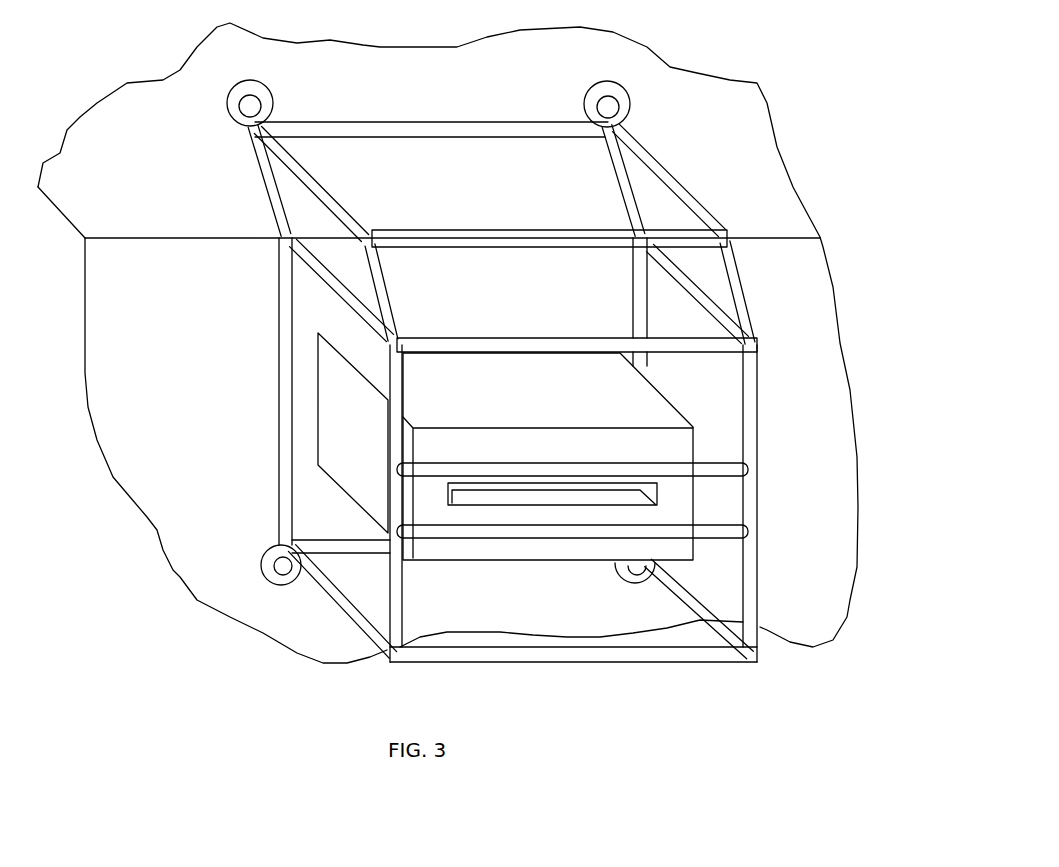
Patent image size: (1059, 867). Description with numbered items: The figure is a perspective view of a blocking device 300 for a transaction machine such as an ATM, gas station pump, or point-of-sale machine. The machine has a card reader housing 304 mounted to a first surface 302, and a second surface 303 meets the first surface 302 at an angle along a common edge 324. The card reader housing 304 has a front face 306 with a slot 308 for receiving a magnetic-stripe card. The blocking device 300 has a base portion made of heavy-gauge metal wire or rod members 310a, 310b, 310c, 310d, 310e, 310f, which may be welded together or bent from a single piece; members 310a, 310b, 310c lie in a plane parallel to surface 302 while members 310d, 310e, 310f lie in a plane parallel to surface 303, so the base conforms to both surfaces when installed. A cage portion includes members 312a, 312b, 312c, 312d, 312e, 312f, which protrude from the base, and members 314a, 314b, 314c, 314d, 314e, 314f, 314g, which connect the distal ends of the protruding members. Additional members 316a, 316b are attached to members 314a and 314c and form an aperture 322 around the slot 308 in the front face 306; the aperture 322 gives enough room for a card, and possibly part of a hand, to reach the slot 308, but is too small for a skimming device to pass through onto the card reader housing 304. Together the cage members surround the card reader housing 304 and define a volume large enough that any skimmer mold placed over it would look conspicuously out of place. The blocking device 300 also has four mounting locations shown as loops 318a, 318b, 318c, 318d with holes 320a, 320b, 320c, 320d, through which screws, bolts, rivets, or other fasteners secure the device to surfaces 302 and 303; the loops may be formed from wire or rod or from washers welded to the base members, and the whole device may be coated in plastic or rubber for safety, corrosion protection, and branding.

The blocking device 300 is at (144, 541).
The first surface 302 is at (177, 435).
The second surface 303 is at (166, 160).
The card reader housing 304 is at (505, 446).
The front face 306 is at (548, 487).
The slot 308 is at (590, 495).
The base portion member 310a is at (280, 382).
The base portion member 310b is at (331, 543).
The base portion member 310c is at (633, 276).
The base portion member 310d is at (623, 192).
The base portion member 310e is at (492, 128).
The base portion member 310f is at (270, 194).
The cage portion member 312a is at (343, 605).
The cage portion member 312b is at (710, 612).
The cage portion member 312c is at (683, 290).
The cage portion member 312d is at (650, 168).
The cage portion member 312e is at (335, 198).
The cage portion member 312f is at (315, 275).
The cage portion member 314a is at (398, 603).
The cage portion member 314b is at (571, 665).
The cage portion member 314c is at (752, 430).
The cage portion member 314d is at (733, 267).
The cage portion member 314e is at (478, 233).
The cage portion member 314f is at (385, 288).
The cage portion member 314g is at (538, 340).
The additional cage member 316a is at (468, 470).
The additional cage member 316b is at (523, 530).
The mounting location loop 318a is at (279, 588).
The mounting location loop 318b is at (737, 579).
The mounting location loop 318c is at (595, 88).
The mounting location loop 318d is at (245, 88).
The hole 320a is at (277, 568).
The hole 320b is at (640, 573).
The hole 320c is at (612, 107).
The hole 320d is at (255, 106).
The aperture 322 is at (722, 503).
The common edge 324 is at (115, 240).